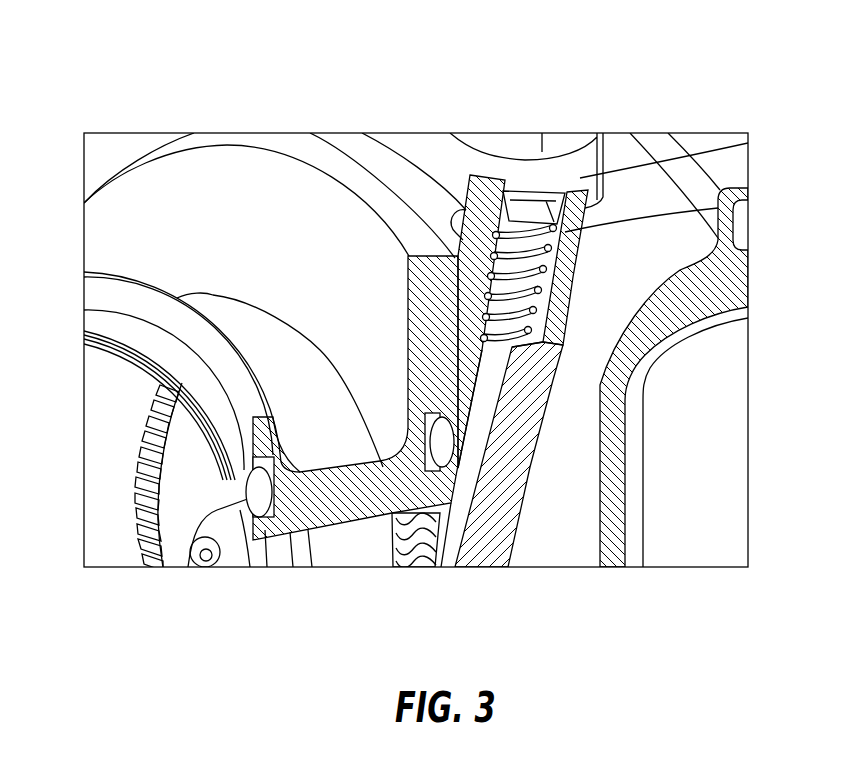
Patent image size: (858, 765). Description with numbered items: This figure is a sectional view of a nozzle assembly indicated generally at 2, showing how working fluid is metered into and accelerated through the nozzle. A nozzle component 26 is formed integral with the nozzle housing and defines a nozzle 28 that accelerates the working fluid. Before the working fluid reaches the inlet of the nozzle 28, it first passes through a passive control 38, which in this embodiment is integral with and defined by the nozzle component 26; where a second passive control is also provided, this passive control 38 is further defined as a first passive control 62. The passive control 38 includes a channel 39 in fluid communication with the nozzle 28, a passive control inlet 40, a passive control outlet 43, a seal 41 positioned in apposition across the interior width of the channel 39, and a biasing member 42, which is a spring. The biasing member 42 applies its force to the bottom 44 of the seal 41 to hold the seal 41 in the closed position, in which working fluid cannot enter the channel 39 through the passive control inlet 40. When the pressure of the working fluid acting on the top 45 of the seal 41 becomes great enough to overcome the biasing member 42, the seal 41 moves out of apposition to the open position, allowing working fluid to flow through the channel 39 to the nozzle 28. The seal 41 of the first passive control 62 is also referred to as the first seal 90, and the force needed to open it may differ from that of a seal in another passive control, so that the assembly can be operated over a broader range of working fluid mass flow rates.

The actuator assembly 2 is at (236, 78).
The nozzle component 26 is at (517, 393).
The nozzle 28 is at (487, 428).
The passive control 38 is at (590, 194).
The first passive control 62 is at (650, 310).
The channel 39 is at (575, 250).
The passive control inlet 40 is at (526, 178).
The seal 41 is at (540, 210).
The first seal 90 is at (589, 156).
The biasing member 42 is at (560, 300).
The passive control outlet 43 is at (518, 345).
The bottom 44 is at (590, 176).
The top 45 is at (538, 205).